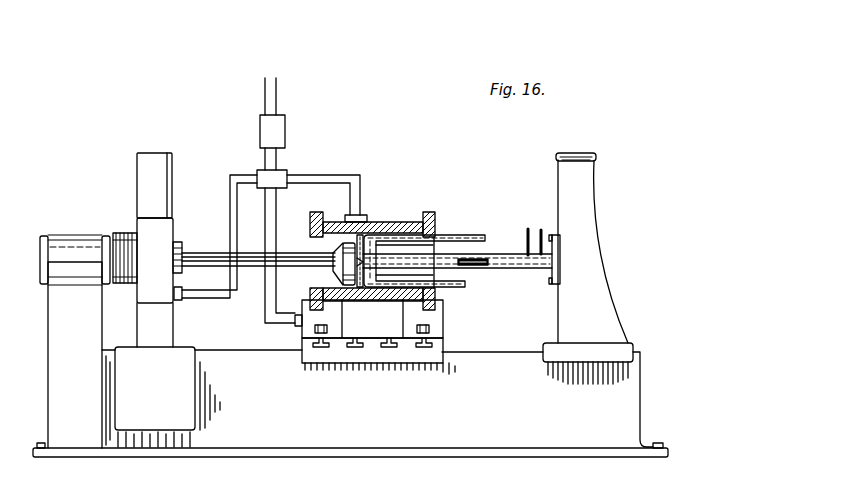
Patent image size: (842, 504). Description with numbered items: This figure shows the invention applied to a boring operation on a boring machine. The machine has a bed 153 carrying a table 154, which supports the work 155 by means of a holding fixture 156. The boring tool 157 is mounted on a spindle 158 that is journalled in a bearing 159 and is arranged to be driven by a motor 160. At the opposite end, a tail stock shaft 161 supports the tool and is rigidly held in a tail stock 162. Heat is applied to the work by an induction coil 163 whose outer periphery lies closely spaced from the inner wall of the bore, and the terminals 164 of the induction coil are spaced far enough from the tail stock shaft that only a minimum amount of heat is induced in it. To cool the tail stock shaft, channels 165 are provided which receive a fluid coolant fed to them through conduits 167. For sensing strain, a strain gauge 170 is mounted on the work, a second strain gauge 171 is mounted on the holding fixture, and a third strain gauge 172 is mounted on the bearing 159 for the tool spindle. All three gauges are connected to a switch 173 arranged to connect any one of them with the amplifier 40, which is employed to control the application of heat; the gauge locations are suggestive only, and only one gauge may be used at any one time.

The amplifier 40 is at (283, 128).
The bed 153 is at (460, 446).
The table 154 is at (443, 337).
The work 155 is at (372, 233).
The holding fixture 156 is at (443, 313).
The boring tool 157 is at (333, 250).
The spindle 158 is at (220, 237).
The bearing 159 is at (168, 228).
The motor 160 is at (87, 240).
The tail stock shaft 161 is at (442, 252).
The tail stock 162 is at (587, 207).
The induction coil 163 is at (370, 226).
The terminals 164 is at (460, 237).
The channels 165 is at (507, 268).
The conduits 167 is at (540, 234).
The strain gauge 170 is at (358, 216).
The second strain gauge 171 is at (292, 322).
The third strain gauge 172 is at (180, 296).
The switch 173 is at (285, 173).